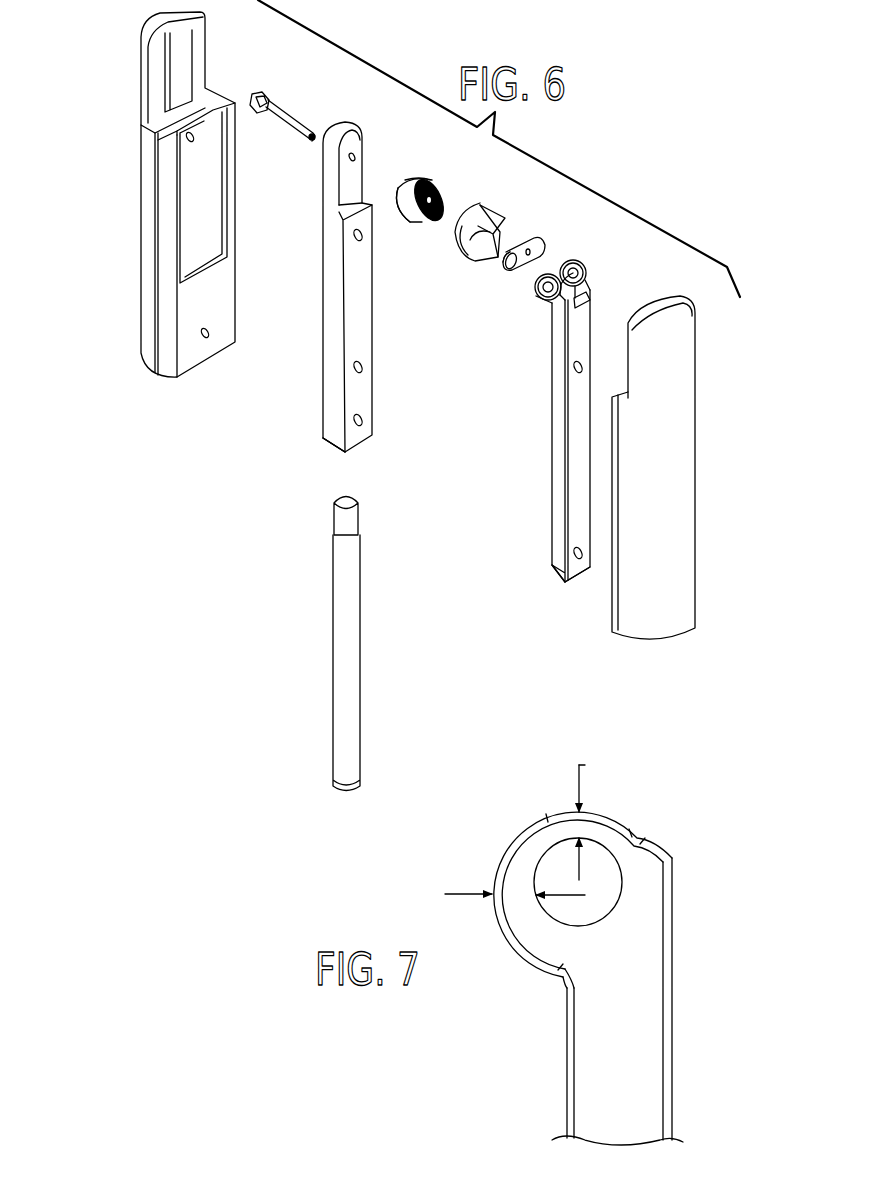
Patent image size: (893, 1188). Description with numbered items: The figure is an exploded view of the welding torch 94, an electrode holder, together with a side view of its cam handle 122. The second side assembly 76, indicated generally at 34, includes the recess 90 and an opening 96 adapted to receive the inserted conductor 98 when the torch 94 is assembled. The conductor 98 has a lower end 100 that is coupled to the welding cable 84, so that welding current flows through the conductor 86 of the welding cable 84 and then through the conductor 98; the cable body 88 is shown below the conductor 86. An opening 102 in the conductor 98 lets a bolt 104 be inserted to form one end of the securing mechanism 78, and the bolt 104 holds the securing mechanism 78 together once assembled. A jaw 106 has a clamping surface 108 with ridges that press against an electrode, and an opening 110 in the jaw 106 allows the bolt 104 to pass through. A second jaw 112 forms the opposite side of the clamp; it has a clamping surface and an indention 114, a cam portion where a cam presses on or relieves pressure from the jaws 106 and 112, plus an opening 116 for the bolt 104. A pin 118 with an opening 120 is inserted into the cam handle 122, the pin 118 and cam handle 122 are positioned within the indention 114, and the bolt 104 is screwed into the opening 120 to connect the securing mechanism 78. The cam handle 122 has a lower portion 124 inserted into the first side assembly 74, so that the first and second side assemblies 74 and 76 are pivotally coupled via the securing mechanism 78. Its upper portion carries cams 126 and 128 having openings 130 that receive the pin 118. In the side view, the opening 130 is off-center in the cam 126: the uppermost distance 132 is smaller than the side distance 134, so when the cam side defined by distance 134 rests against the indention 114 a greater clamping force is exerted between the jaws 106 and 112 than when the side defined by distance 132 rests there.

In FIG. 6, the mounting bracket assembly 34 is at (157, 194).
In FIG. 6, the first side assembly 74 is at (680, 465).
In FIG. 6, the second side assembly 76 is at (147, 217).
In FIG. 6, the securing mechanism 78 is at (349, 304).
In FIG. 6, the welding cable 84 is at (322, 637).
In FIG. 6, the conductor of the welding cable 86 is at (352, 522).
In FIG. 6, the pin shaft 88 is at (350, 652).
In FIG. 6, the recess 90 is at (200, 222).
In FIG. 6, the torch 94 is at (704, 203).
In FIG. 6, the opening 96 is at (177, 98).
In FIG. 6, the conductor 98 is at (360, 333).
In FIG. 6, the lower end 100 is at (334, 434).
In FIG. 6, the opening 102 is at (356, 157).
In FIG. 6, the bolt 104 is at (292, 113).
In FIG. 6, the jaw 106 is at (416, 178).
In FIG. 6, the clamping surface 108 is at (443, 191).
In FIG. 6, the opening 110 is at (431, 222).
In FIG. 6, the second jaw 112 is at (482, 206).
In FIG. 6, the indention 114 is at (475, 248).
In FIG. 6, the opening 116 is at (502, 238).
In FIG. 6, the pin 118 is at (512, 266).
In FIG. 6, the opening 120 is at (552, 268).
In FIG. 6, the cam handle 122 is at (567, 430).
In FIG. 7, the cam handle 122 is at (604, 948).
In FIG. 6, the lower portion 124 is at (556, 566).
In FIG. 6, the cam 126 is at (545, 304).
In FIG. 7, the cam 126 is at (645, 958).
In FIG. 6, the cam 128 is at (586, 262).
In FIG. 6, the opening 130 is at (588, 300).
In FIG. 7, the opening 130 is at (602, 872).
In FIG. 7, the uppermost distance 132 is at (581, 777).
In FIG. 7, the side distance 134 is at (462, 896).